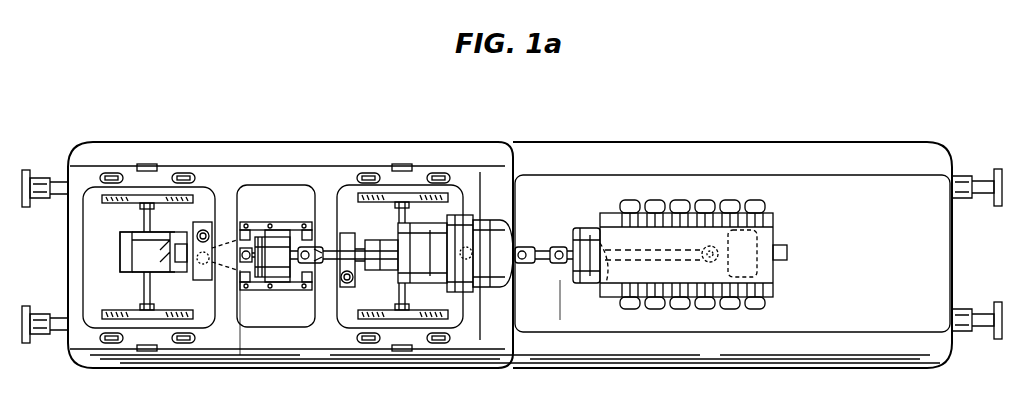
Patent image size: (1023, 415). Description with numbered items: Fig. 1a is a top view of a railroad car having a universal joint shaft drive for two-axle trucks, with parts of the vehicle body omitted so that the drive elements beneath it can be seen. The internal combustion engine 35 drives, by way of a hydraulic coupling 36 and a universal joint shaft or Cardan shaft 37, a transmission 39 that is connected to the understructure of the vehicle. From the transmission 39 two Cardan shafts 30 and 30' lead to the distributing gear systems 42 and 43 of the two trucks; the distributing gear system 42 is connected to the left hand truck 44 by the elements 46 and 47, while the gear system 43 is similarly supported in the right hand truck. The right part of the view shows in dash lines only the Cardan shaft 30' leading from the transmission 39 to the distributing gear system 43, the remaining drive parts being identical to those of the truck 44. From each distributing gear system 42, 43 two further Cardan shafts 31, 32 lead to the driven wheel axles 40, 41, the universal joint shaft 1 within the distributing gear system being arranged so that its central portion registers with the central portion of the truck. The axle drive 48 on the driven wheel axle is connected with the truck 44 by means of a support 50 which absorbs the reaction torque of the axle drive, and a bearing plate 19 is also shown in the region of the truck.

The universal joint shaft 1 is at (284, 250).
The bearing plate 19 is at (377, 247).
The Cardan shaft 30 is at (376, 275).
The Cardan shaft 30' is at (594, 277).
The Cardan shaft 31 is at (212, 274).
The Cardan shaft 32 is at (332, 272).
The internal combustion engine 35 is at (770, 222).
The hydraulic coupling 36 is at (578, 240).
The Cardan shaft 37 is at (538, 264).
The transmission 39 is at (475, 222).
The driven wheel axle 40 is at (140, 213).
The driven wheel axle 41 is at (395, 210).
The distributing gear system 42 is at (276, 293).
The distributing gear system 43 is at (758, 268).
The truck 44 is at (325, 172).
The element 46 is at (250, 224).
The element 47 is at (260, 292).
The axle drive 48 is at (130, 258).
The support 50 is at (171, 232).